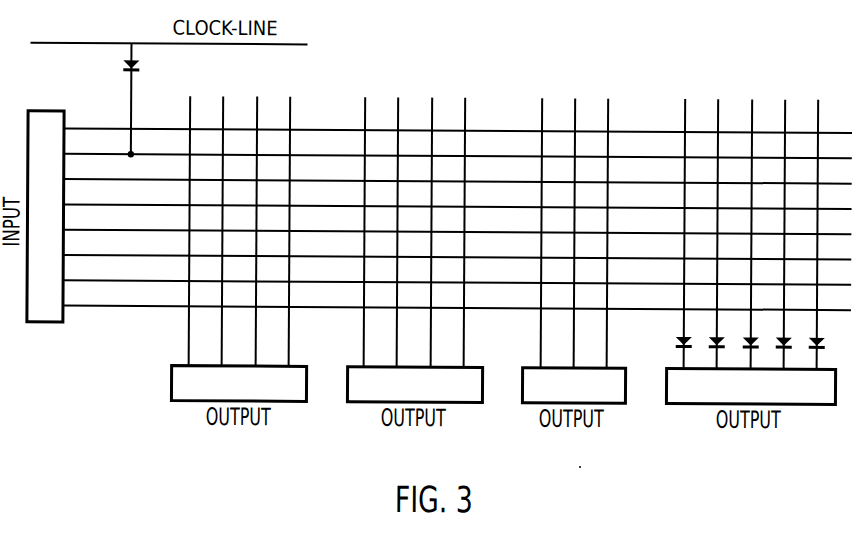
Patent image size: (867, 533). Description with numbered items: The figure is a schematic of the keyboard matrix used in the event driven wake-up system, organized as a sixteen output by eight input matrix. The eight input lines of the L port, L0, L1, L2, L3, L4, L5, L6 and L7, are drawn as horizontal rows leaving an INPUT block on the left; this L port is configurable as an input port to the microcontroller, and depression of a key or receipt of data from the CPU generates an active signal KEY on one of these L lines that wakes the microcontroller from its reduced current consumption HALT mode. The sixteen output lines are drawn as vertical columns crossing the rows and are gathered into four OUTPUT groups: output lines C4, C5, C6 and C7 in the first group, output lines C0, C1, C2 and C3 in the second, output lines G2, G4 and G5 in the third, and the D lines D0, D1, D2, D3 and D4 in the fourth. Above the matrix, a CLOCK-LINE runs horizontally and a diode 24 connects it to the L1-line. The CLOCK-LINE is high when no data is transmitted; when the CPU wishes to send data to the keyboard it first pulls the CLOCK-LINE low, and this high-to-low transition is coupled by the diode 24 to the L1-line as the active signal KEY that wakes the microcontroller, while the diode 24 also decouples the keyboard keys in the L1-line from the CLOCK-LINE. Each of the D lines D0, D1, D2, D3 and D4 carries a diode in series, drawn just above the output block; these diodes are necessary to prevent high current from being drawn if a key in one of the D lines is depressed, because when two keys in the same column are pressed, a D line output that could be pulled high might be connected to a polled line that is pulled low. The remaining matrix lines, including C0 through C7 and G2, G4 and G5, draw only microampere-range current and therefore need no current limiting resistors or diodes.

The diode 24 is at (140, 66).
The L line L0 is at (444, 131).
The L1-line L1 is at (444, 156).
The L line L2 is at (444, 181).
The L line L3 is at (443, 207).
The L line L4 is at (443, 232).
The L line L5 is at (443, 257).
The L line L6 is at (443, 283).
The L line L7 is at (443, 308).
The keyboard matrix output line C0 is at (367, 248).
The keyboard matrix output line C1 is at (399, 248).
The keyboard matrix output line C2 is at (430, 249).
The keyboard matrix output line C3 is at (461, 249).
The keyboard matrix output line C4 is at (191, 247).
The keyboard matrix output line C5 is at (224, 247).
The keyboard matrix output line C6 is at (257, 248).
The keyboard matrix output line C7 is at (289, 248).
The keyboard matrix output line G2 is at (542, 249).
The keyboard matrix output line G4 is at (574, 249).
The keyboard matrix output line G5 is at (605, 250).
The D line D0 is at (687, 250).
The D line D1 is at (718, 250).
The D line D2 is at (749, 250).
The D line D3 is at (780, 251).
The D line D4 is at (812, 251).